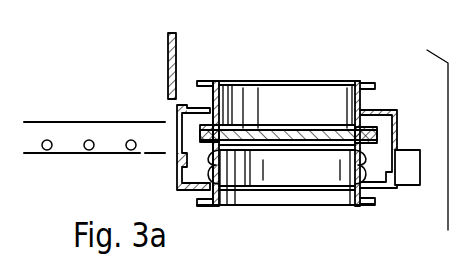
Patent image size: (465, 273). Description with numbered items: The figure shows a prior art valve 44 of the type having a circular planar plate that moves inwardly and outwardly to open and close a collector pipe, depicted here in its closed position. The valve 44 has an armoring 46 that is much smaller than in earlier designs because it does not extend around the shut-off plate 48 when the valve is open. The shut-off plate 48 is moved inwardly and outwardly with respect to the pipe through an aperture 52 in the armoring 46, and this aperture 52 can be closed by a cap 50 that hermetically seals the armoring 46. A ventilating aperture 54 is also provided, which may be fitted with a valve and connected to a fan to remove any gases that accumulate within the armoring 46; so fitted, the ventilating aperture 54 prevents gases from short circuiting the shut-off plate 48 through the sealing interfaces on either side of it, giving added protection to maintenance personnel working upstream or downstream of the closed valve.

The valve 44 is at (114, 78).
The armoring 46 is at (396, 118).
The shut-off plate 48 is at (300, 133).
The cap 50 is at (177, 69).
The aperture 52 is at (178, 149).
The ventilating aperture 54 is at (413, 176).